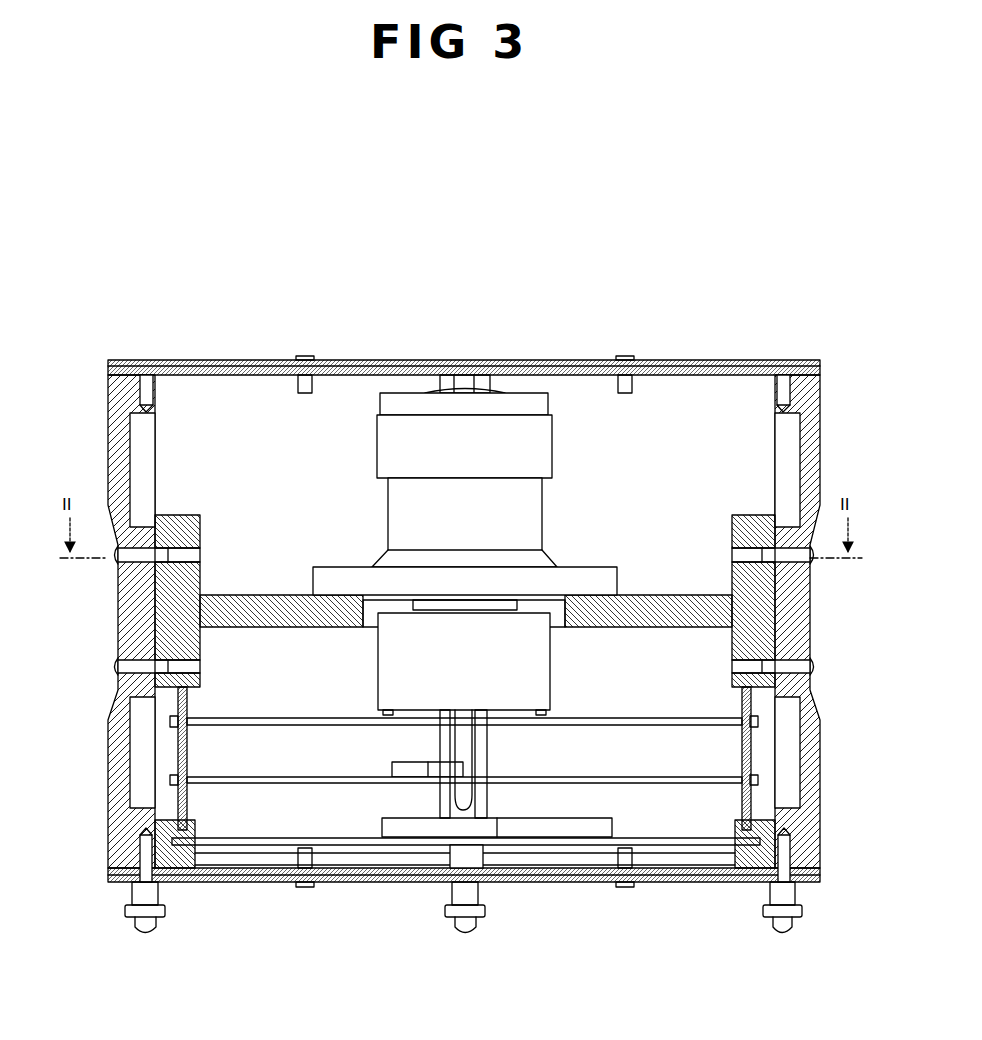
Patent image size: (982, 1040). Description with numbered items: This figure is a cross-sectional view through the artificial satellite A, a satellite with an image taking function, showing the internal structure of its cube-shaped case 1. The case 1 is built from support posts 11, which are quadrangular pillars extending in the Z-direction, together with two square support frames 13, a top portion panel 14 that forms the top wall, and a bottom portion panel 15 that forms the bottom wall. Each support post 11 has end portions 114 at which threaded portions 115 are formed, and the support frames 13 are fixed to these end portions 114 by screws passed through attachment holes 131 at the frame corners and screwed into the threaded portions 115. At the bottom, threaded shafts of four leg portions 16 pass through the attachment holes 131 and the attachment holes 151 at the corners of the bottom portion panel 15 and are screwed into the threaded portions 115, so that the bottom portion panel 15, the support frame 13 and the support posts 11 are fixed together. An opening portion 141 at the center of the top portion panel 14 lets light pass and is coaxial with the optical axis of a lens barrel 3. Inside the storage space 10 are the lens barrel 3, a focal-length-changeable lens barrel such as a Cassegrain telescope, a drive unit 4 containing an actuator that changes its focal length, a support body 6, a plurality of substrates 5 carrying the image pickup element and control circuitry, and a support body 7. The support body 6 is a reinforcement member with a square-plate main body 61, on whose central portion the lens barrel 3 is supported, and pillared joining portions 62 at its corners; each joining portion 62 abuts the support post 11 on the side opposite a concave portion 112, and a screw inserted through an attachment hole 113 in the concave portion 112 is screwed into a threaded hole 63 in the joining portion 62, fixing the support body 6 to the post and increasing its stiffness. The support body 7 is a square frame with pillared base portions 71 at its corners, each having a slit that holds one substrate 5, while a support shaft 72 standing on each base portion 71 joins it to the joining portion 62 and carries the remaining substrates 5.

The artificial satellite A is at (196, 231).
The case 1 is at (668, 355).
The lens barrel 3 is at (553, 458).
The drive unit 4 is at (552, 660).
The substrates 5 is at (640, 718).
The support body 6 is at (465, 581).
The support body 7 is at (465, 822).
The storage space 10 is at (322, 527).
The support post 11 is at (108, 440).
The support frame 13 is at (115, 360).
The top portion panel 14 is at (222, 360).
The bottom portion panel 15 is at (358, 884).
The leg portions 16 is at (148, 940).
The main body 61 is at (262, 595).
The joining portion 62 is at (200, 516).
The threaded hole 63 is at (205, 560).
The base portion 71 is at (195, 825).
The support shaft 72 is at (190, 742).
The concave portion 112 is at (116, 625).
The attachment holes 113 is at (116, 565).
The end portions 114 is at (146, 378).
The threaded portions 115 is at (155, 418).
The attachment holes 131 is at (160, 380).
The opening portion 141 is at (400, 358).
The attachment holes 151 is at (162, 880).